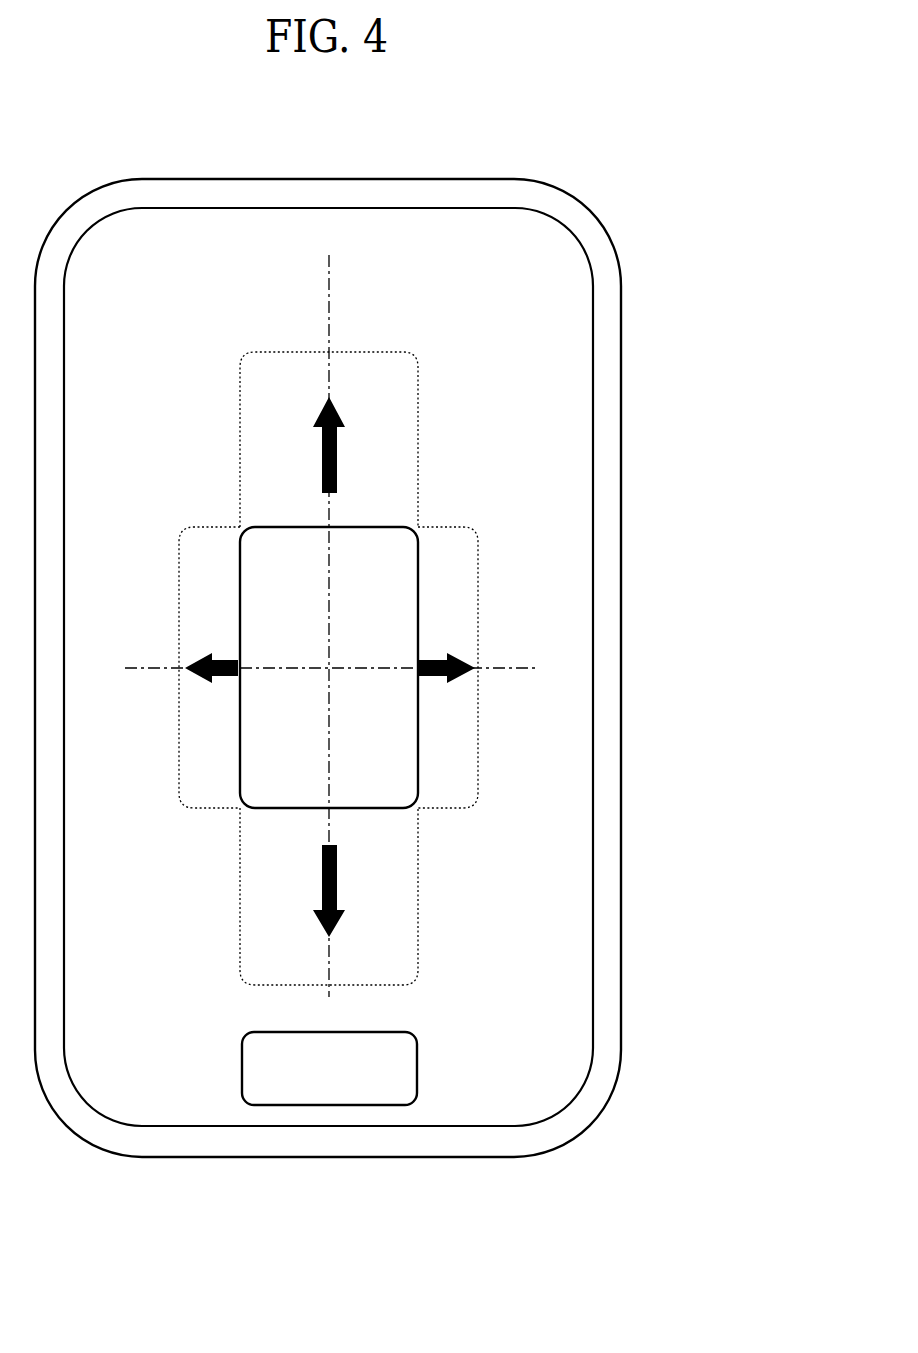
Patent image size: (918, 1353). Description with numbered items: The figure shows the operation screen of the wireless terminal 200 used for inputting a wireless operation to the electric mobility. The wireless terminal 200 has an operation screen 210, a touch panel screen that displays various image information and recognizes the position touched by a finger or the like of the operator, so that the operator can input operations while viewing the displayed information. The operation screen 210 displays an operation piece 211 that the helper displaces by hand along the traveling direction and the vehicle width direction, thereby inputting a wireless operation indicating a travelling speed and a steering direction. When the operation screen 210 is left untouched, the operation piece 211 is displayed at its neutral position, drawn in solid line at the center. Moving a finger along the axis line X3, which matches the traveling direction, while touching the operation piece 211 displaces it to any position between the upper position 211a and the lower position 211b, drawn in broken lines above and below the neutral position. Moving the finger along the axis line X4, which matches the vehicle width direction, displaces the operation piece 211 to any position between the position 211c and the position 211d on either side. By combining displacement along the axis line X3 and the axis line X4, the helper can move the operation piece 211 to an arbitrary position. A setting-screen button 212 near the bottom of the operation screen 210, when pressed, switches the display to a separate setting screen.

The wireless terminal 200 is at (657, 151).
The operation screen 210 is at (512, 1034).
The operation piece 211 is at (370, 558).
The position 211a is at (384, 350).
The position 211b is at (242, 984).
The position 211c is at (460, 527).
The position 211d is at (198, 525).
The setting-screen button 212 is at (330, 1106).
The axis line X3 is at (330, 606).
The axis line X4 is at (347, 667).